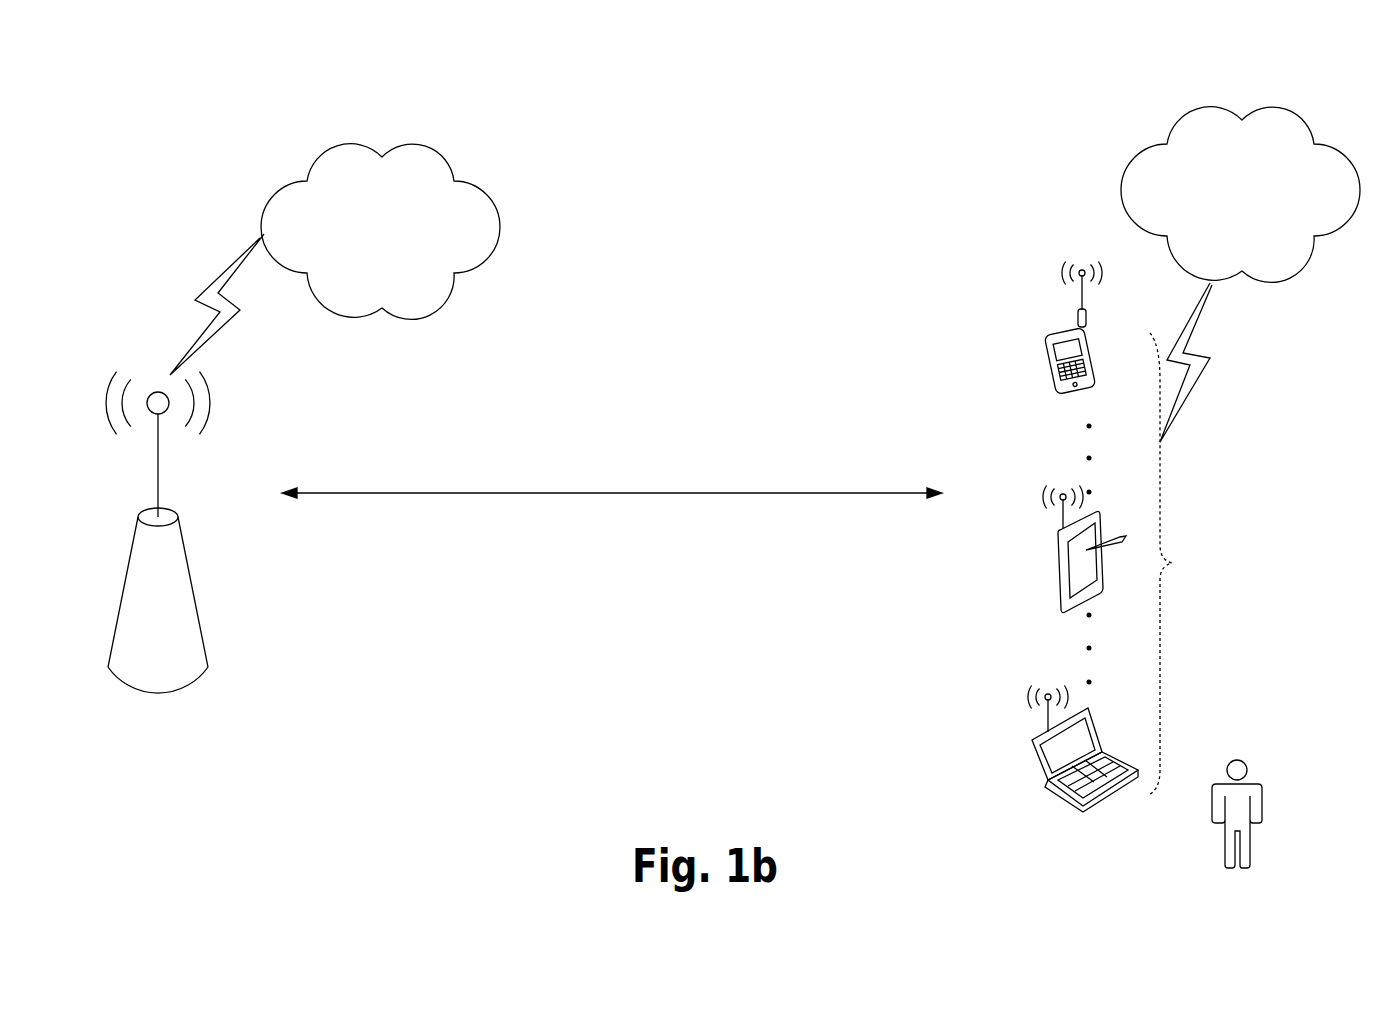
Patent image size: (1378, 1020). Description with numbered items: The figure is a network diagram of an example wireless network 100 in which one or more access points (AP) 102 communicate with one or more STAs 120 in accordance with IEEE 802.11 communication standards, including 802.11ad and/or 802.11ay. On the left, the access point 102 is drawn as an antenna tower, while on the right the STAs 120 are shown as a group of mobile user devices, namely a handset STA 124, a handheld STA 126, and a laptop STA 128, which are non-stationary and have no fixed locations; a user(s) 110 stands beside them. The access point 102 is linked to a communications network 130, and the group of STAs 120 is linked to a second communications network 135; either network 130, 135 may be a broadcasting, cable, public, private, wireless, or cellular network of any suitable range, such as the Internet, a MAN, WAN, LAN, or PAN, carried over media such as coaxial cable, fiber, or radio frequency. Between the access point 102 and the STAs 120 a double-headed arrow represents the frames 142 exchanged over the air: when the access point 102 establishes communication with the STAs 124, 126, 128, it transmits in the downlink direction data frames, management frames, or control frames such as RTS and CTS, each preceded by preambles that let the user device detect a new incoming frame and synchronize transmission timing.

The wireless network 100 is at (1257, 67).
The access point (AP) 102 is at (141, 782).
The user(s) 110 is at (1219, 917).
The STAs 120 is at (1213, 600).
The STA 124 is at (1060, 333).
The STA 126 is at (1056, 558).
The STA 128 is at (1040, 767).
The communications network 130 is at (360, 262).
The communications network 135 is at (1222, 227).
The frames 142 is at (600, 492).